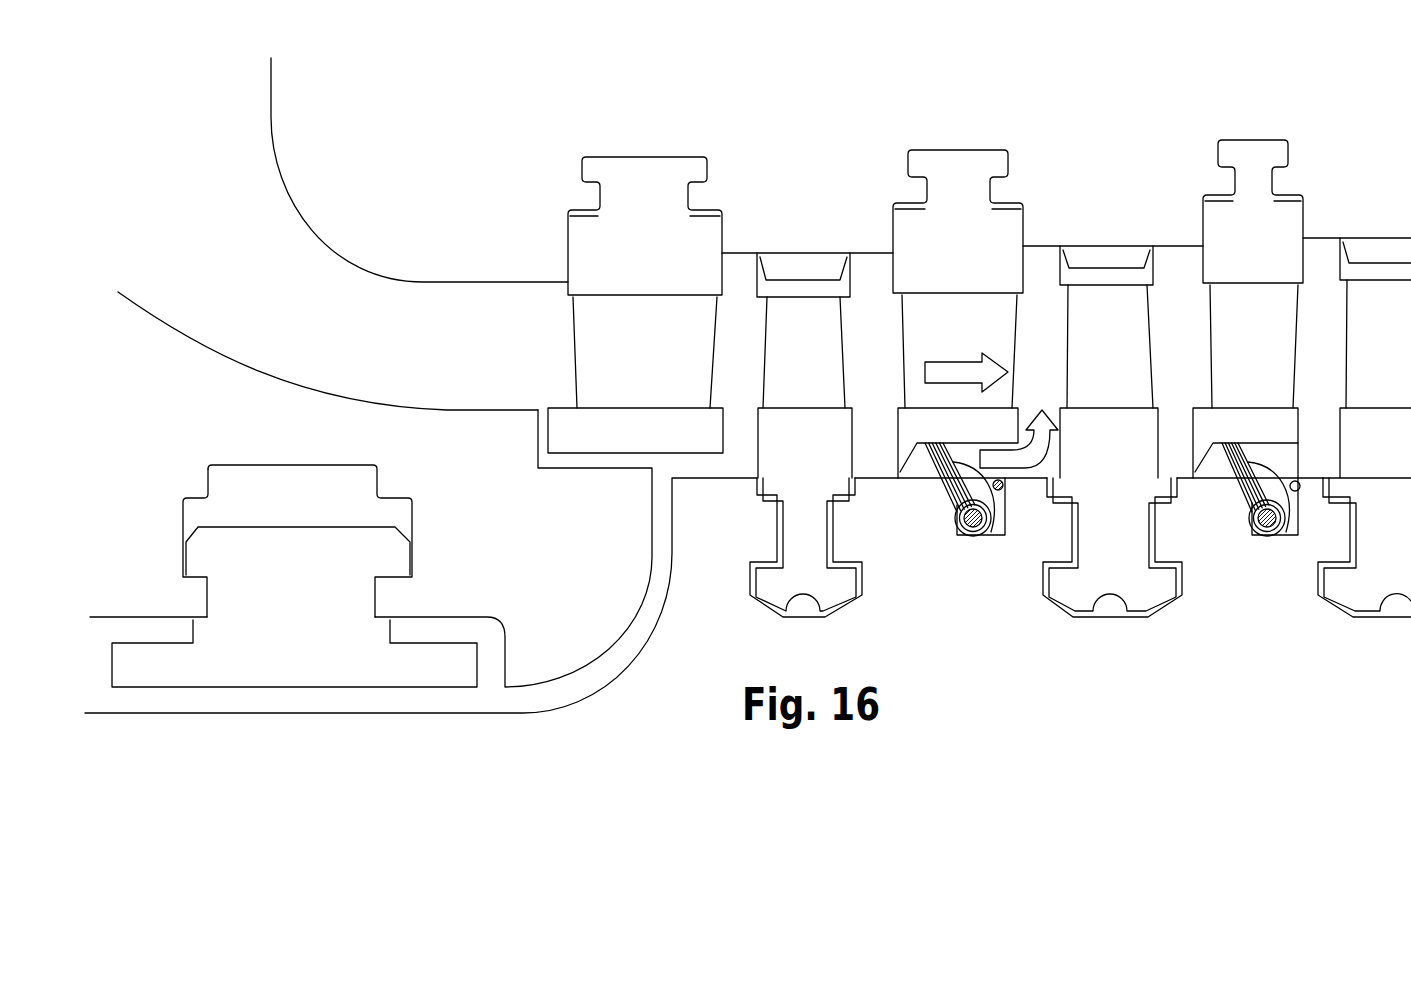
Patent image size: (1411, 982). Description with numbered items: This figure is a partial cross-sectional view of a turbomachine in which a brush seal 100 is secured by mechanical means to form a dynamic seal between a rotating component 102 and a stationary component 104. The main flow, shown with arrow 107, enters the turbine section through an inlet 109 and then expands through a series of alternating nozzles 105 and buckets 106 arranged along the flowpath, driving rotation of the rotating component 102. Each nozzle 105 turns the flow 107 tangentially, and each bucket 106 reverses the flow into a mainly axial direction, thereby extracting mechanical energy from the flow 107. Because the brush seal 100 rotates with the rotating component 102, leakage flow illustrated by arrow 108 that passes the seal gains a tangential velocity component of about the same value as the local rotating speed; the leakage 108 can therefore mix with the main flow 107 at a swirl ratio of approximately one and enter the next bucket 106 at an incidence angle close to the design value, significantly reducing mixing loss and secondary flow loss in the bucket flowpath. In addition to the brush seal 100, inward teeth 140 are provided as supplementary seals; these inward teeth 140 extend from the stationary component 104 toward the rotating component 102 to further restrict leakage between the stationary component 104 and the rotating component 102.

The brush seal 100 is at (1253, 543).
The rotating component 102 is at (955, 658).
The stationary component 104 is at (663, 442).
The nozzle 105 is at (668, 363).
The bucket 106 is at (829, 366).
The main flow 107 is at (978, 372).
The leakage flow 108 is at (1033, 452).
The inlet 109 is at (268, 284).
The inward teeth 140 is at (908, 458).